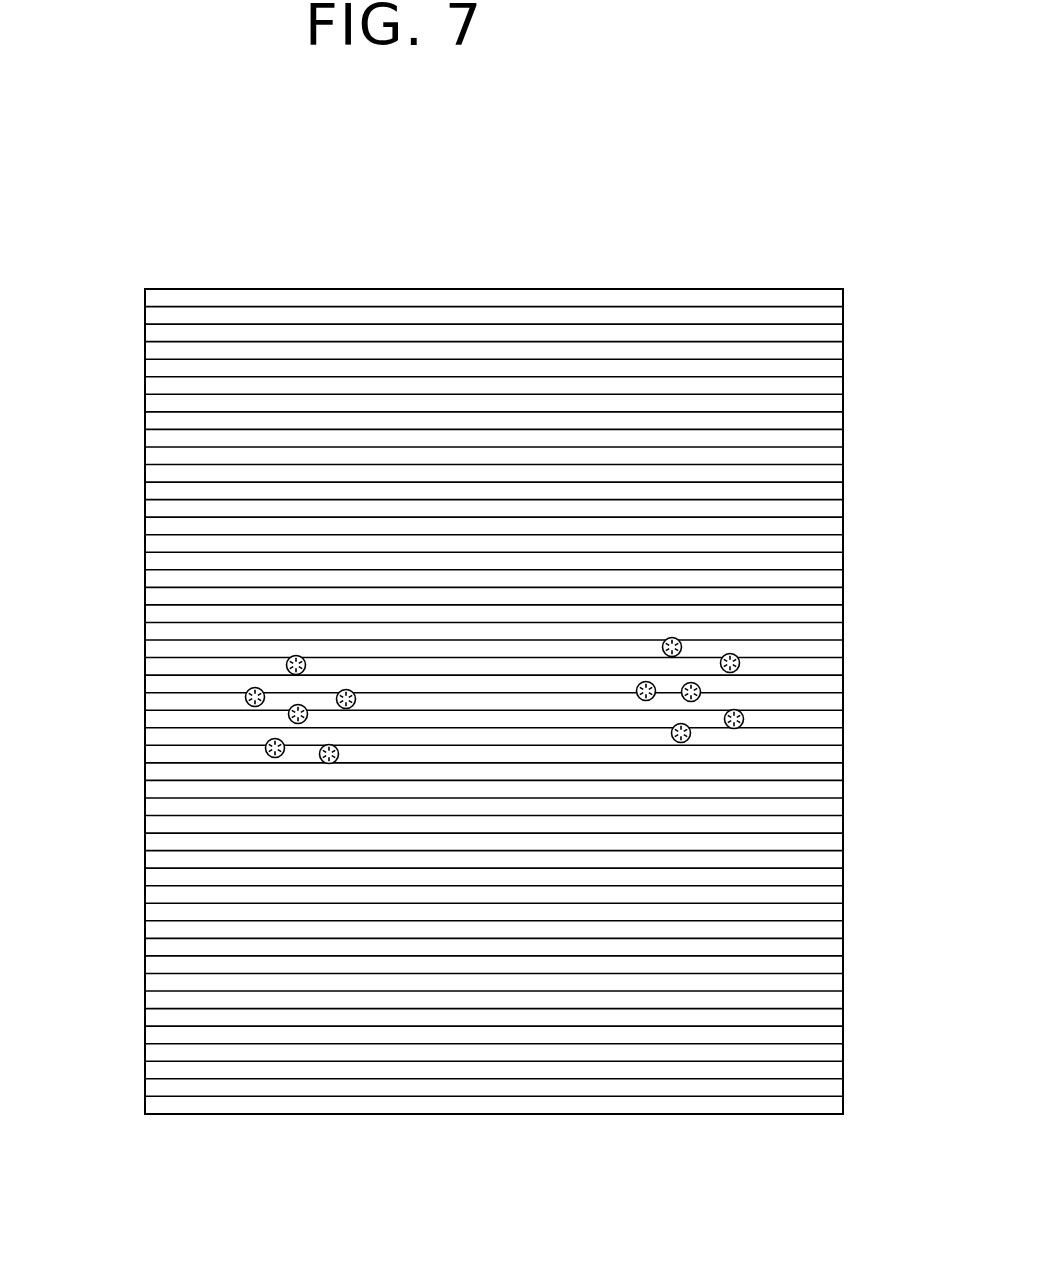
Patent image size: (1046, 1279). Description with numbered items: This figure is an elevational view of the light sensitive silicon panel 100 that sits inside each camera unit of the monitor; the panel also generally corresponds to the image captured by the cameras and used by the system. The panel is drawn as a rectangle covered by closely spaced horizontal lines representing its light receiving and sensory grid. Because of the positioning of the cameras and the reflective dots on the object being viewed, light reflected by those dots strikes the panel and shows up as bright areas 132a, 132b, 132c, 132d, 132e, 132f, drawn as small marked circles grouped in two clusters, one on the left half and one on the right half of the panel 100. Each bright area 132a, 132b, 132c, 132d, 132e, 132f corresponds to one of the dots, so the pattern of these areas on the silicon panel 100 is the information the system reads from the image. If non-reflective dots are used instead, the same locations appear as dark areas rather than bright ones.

The light sensitive silicon panel 100 is at (283, 289).
The bright area 132a is at (287, 667).
The bright area 132b is at (246, 695).
The bright area 132c is at (266, 752).
The bright area 132d is at (288, 713).
The bright area 132e is at (346, 689).
The bright area 132f is at (322, 758).